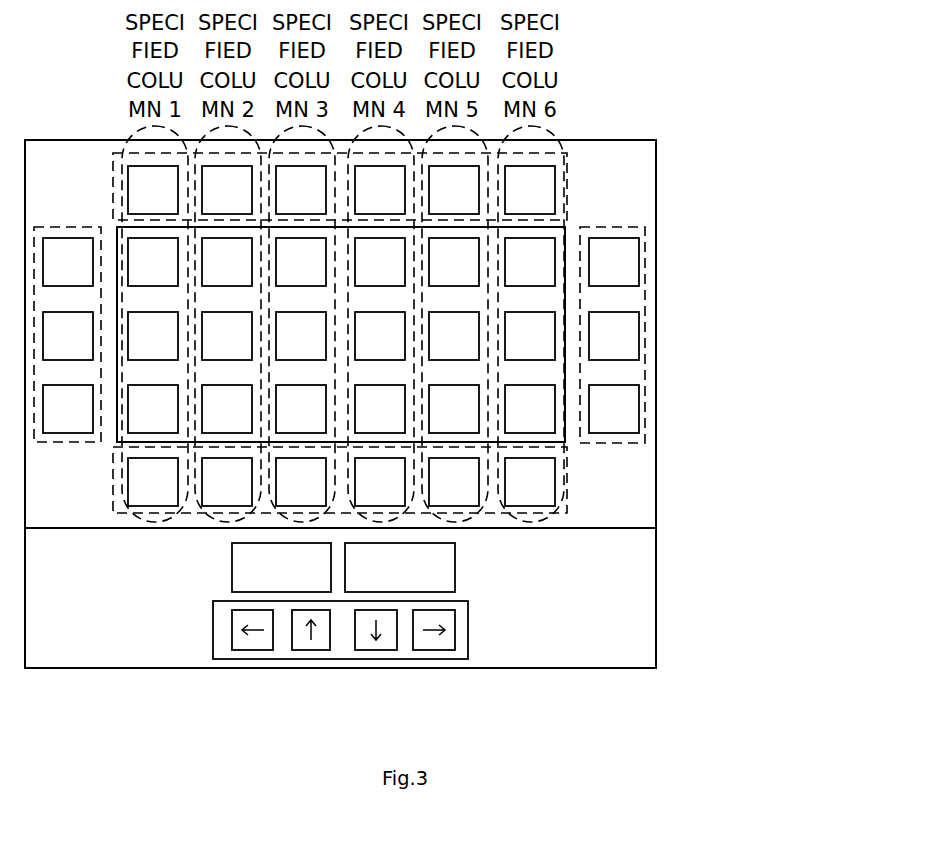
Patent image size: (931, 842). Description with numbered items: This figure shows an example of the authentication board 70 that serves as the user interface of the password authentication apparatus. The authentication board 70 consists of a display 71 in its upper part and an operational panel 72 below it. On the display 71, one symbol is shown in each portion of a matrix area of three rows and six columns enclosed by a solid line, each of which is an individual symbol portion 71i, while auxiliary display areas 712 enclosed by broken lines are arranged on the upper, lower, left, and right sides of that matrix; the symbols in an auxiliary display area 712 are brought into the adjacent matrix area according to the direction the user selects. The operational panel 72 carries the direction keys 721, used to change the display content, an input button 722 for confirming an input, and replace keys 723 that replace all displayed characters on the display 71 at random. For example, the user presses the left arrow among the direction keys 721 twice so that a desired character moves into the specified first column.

The authentication board 70 is at (800, 147).
The display 71 is at (413, 324).
The operational panel 72 is at (452, 600).
The character key 71i is at (565, 296).
The auxiliary display areas 712 is at (659, 335).
The direction keys 721 is at (213, 628).
The input button 722 is at (232, 566).
The replace keys 723 is at (457, 572).